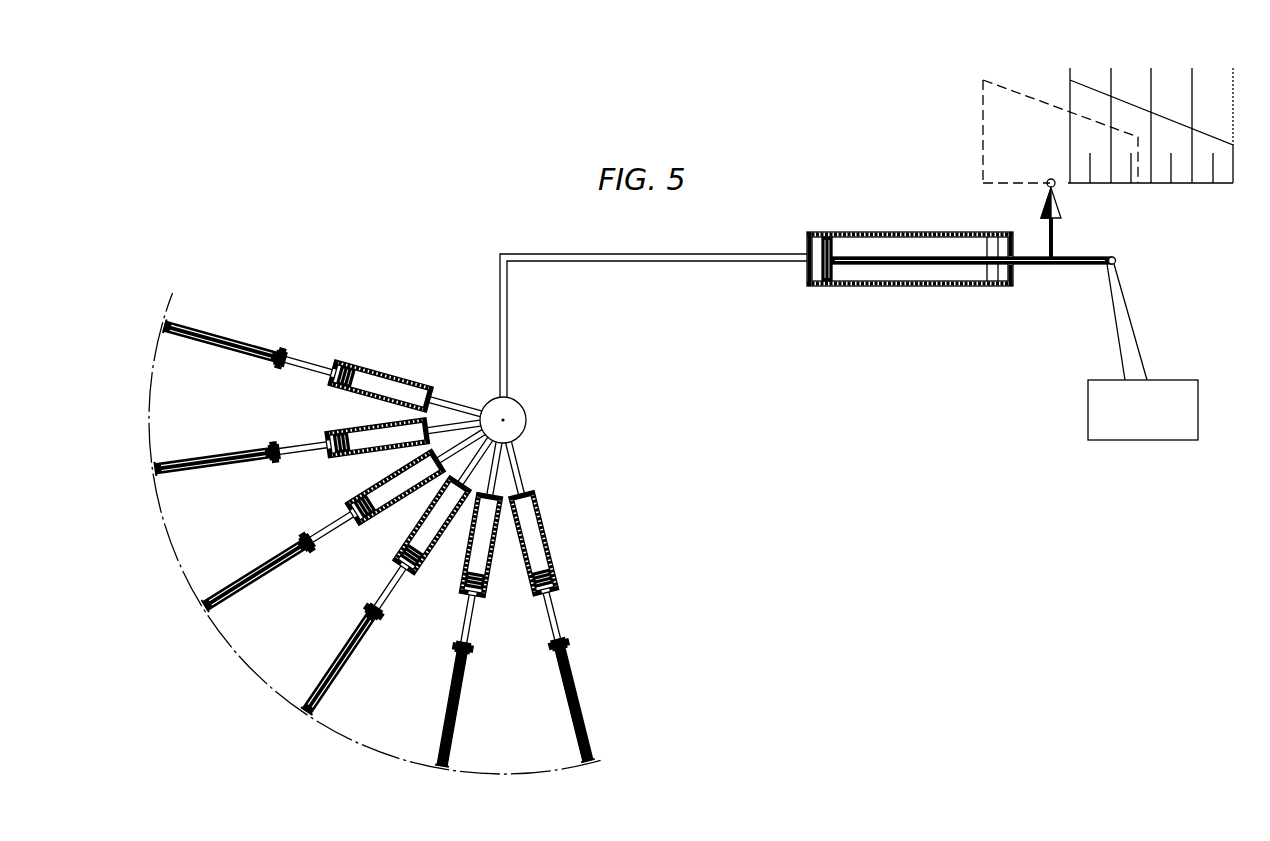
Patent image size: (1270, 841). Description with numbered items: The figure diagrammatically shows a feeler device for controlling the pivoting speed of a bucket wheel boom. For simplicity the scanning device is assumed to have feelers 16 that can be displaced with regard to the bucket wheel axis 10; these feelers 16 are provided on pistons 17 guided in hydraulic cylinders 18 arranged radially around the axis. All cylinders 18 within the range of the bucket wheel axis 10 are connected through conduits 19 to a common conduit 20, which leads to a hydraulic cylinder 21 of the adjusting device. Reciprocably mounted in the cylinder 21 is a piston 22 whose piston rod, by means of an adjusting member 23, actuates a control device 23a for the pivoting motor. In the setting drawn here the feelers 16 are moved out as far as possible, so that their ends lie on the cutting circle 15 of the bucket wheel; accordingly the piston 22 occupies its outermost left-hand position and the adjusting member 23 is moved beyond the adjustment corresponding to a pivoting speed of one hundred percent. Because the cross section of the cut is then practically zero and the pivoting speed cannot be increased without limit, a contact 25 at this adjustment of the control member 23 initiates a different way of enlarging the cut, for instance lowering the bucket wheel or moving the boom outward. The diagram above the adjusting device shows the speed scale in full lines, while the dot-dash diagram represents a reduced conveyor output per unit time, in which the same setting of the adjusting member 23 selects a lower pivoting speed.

The bucket wheel axis 10 is at (506, 420).
The cutting circle 15 is at (268, 685).
The feelers 16 is at (306, 362).
The pistons 17 is at (350, 365).
The hydraulic cylinders 18 is at (396, 373).
The conduits 19 is at (462, 400).
The conduit 20 is at (508, 318).
The hydraulic cylinder 21 is at (933, 286).
The piston 22 is at (826, 286).
The adjusting member 23 is at (1118, 312).
The control device 23a is at (1115, 425).
The contact 25 is at (1117, 137).